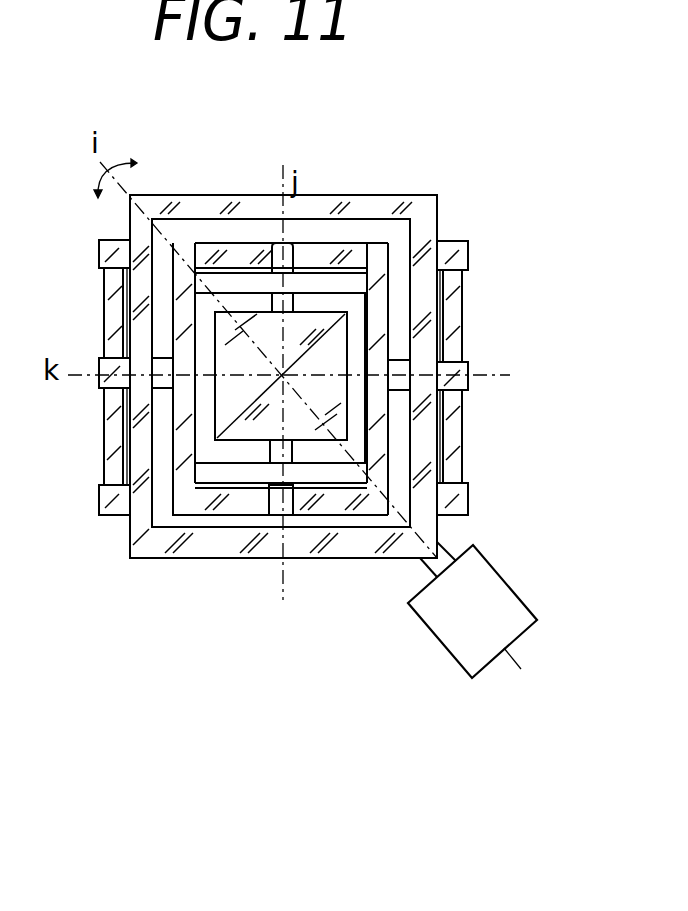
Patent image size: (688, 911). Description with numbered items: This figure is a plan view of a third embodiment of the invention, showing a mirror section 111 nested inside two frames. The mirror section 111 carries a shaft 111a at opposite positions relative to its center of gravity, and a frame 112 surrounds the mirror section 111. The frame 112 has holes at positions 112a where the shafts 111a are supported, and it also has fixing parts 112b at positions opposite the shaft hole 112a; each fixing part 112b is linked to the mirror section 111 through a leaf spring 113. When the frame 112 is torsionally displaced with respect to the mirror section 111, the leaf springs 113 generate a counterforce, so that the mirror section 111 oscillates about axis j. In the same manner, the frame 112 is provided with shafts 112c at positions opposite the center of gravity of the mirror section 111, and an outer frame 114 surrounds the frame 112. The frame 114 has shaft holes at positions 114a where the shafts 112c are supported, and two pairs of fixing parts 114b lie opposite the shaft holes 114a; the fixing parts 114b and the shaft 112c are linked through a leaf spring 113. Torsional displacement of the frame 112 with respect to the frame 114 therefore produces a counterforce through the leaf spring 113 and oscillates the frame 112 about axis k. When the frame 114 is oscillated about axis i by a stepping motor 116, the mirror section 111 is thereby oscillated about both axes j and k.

The mirror section 111 is at (370, 330).
The shaft 111a is at (272, 243).
The frame 112 is at (375, 430).
The shaft hole 112a is at (270, 473).
The fixing part 112b is at (185, 498).
The shaft 112c is at (120, 372).
The leaf spring 113 is at (333, 243).
The frame 114 is at (140, 502).
The shaft hole 114a is at (104, 320).
The fixing part 114b is at (100, 230).
The stepping motor 116 is at (482, 588).